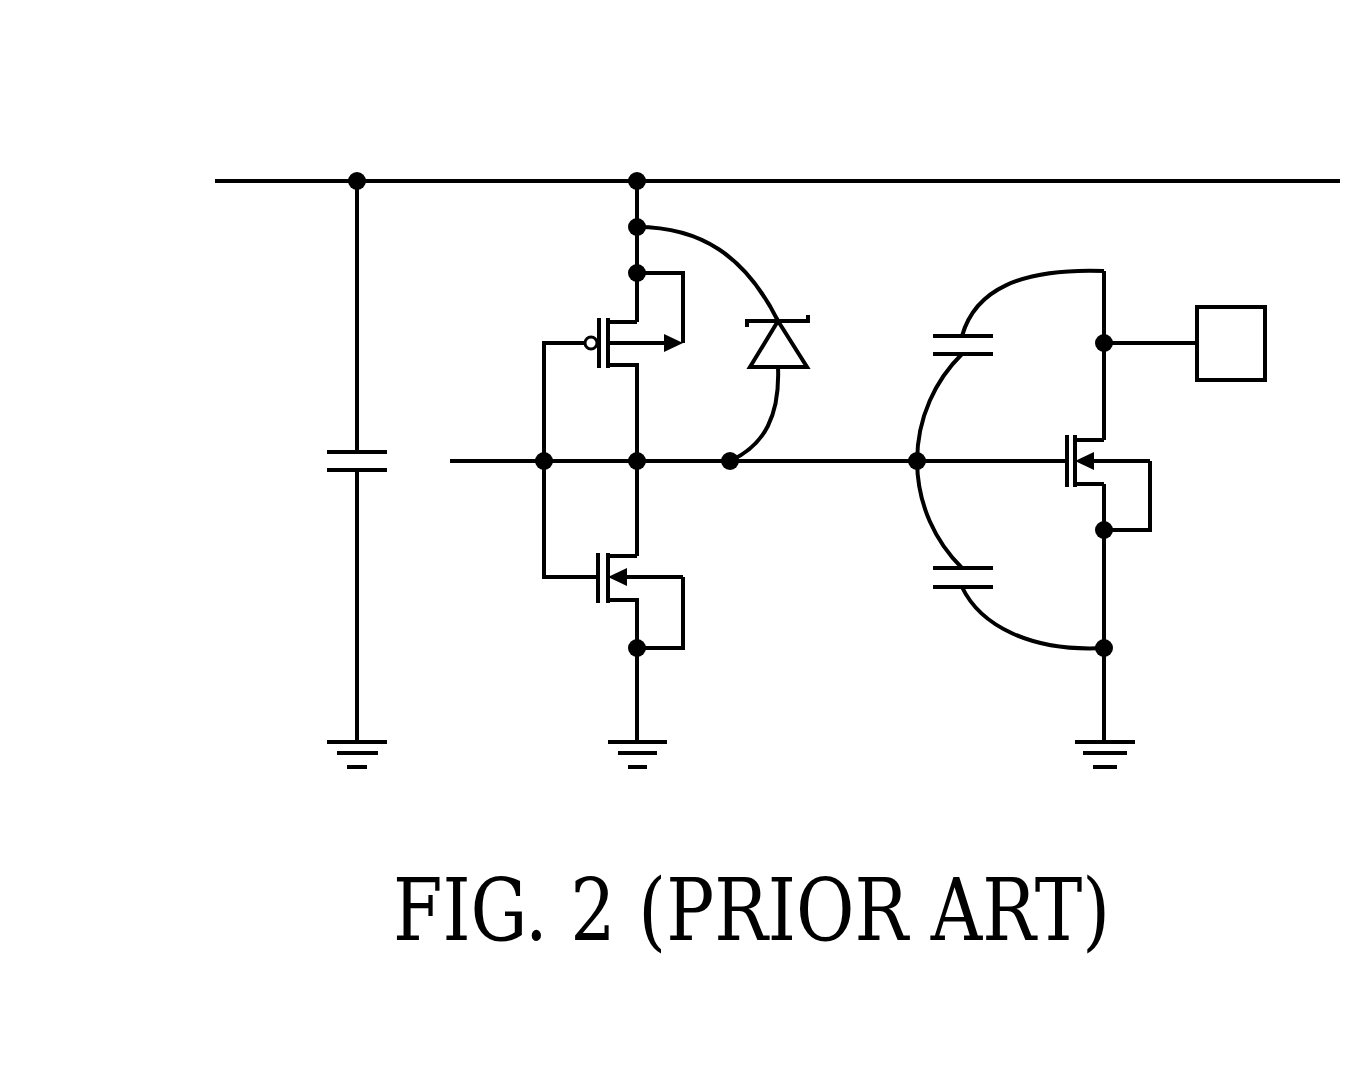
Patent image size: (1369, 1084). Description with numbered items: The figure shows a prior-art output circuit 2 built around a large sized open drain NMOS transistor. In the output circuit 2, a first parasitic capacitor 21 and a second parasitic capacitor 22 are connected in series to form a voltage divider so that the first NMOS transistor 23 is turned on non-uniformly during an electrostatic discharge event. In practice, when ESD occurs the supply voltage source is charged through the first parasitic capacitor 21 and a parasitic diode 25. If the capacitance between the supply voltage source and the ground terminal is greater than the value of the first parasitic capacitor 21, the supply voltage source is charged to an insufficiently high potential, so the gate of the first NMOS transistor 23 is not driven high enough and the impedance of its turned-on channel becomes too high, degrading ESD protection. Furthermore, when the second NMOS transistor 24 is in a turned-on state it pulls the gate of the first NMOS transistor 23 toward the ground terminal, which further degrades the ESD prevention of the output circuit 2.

The output circuit 2 is at (92, 87).
The first parasitic capacitor 21 is at (980, 357).
The second parasitic capacitor 22 is at (957, 588).
The first NMOS transistor 23 is at (1085, 488).
The second NMOS transistor 24 is at (622, 605).
The parasitic diode 25 is at (795, 318).